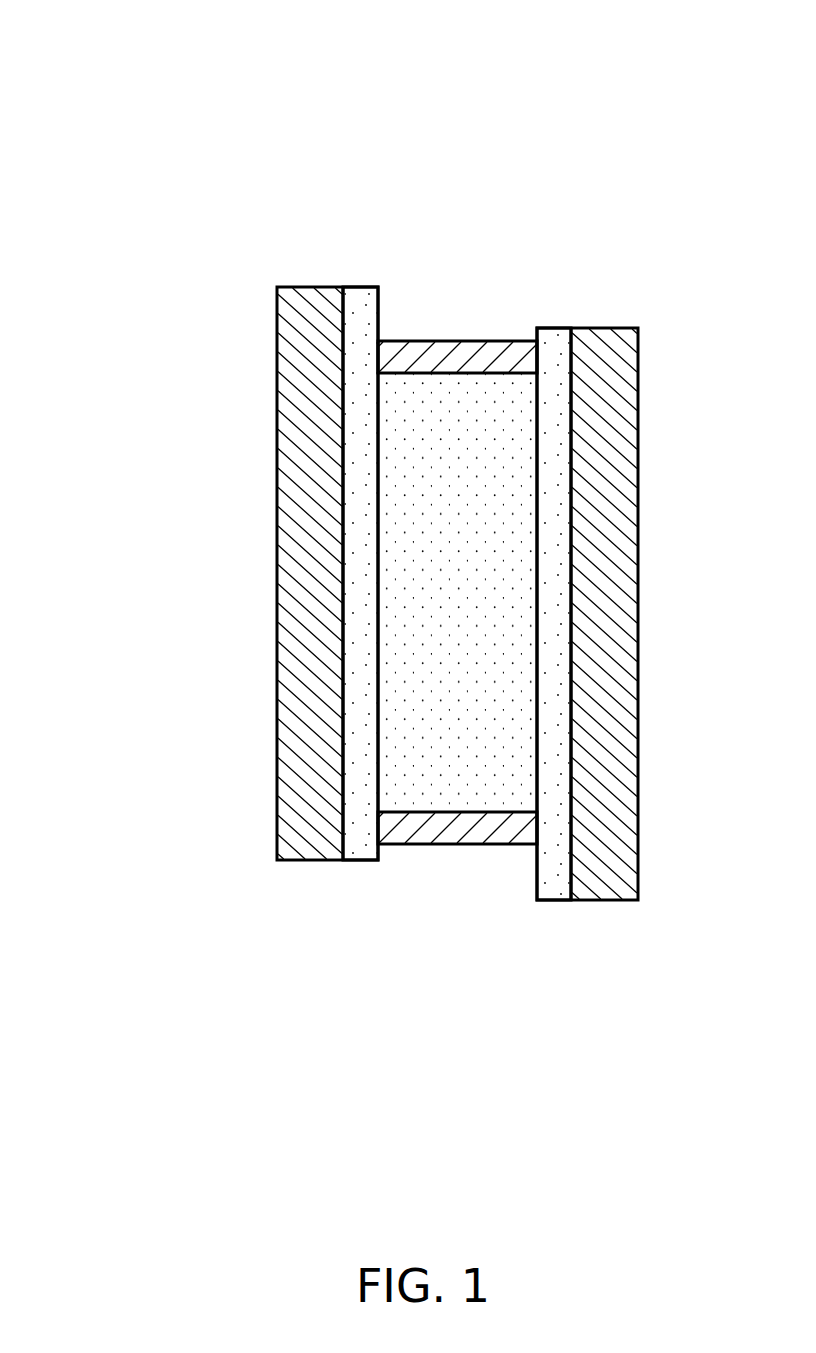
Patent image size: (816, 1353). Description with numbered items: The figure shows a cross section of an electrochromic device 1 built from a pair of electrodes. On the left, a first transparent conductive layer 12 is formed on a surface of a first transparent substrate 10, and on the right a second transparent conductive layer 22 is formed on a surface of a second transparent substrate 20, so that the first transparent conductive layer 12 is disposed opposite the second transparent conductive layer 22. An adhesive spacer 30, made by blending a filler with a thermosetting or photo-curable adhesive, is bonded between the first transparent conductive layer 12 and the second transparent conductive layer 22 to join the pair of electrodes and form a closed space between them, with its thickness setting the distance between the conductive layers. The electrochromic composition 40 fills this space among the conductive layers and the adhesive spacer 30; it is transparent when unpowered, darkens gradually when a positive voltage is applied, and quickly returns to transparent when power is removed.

The electrochromic device 1 is at (171, 77).
The first transparent substrate 10 is at (285, 571).
The first transparent conductive layer 12 is at (361, 298).
The second transparent substrate 20 is at (628, 578).
The second transparent conductive layer 22 is at (557, 340).
The adhesive spacer 30 is at (460, 355).
The electrochromic composition 40 is at (455, 798).